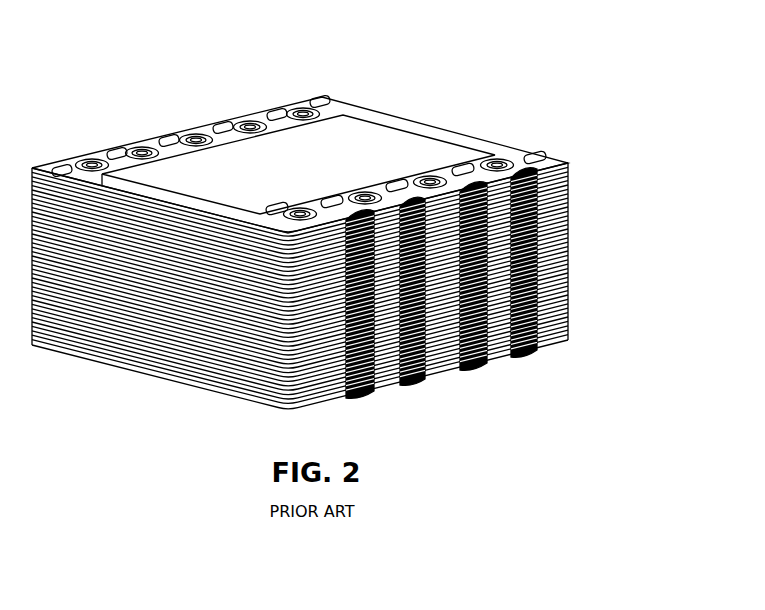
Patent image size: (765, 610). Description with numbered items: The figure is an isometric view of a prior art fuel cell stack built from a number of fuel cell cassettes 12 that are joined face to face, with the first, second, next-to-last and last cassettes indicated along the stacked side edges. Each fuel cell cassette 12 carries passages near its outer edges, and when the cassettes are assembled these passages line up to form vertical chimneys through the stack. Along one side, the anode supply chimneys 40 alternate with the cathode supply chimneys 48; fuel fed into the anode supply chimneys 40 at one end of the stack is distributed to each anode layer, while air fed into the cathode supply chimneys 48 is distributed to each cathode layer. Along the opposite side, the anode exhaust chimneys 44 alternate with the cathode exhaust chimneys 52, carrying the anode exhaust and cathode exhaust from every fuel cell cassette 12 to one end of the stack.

The fuel cell cassette 12 is at (568, 163).
The anode supply chimney 40 is at (92, 163).
The cathode supply chimney 48 is at (60, 170).
The anode exhaust chimney 44 is at (300, 212).
The cathode exhaust chimney 52 is at (277, 206).